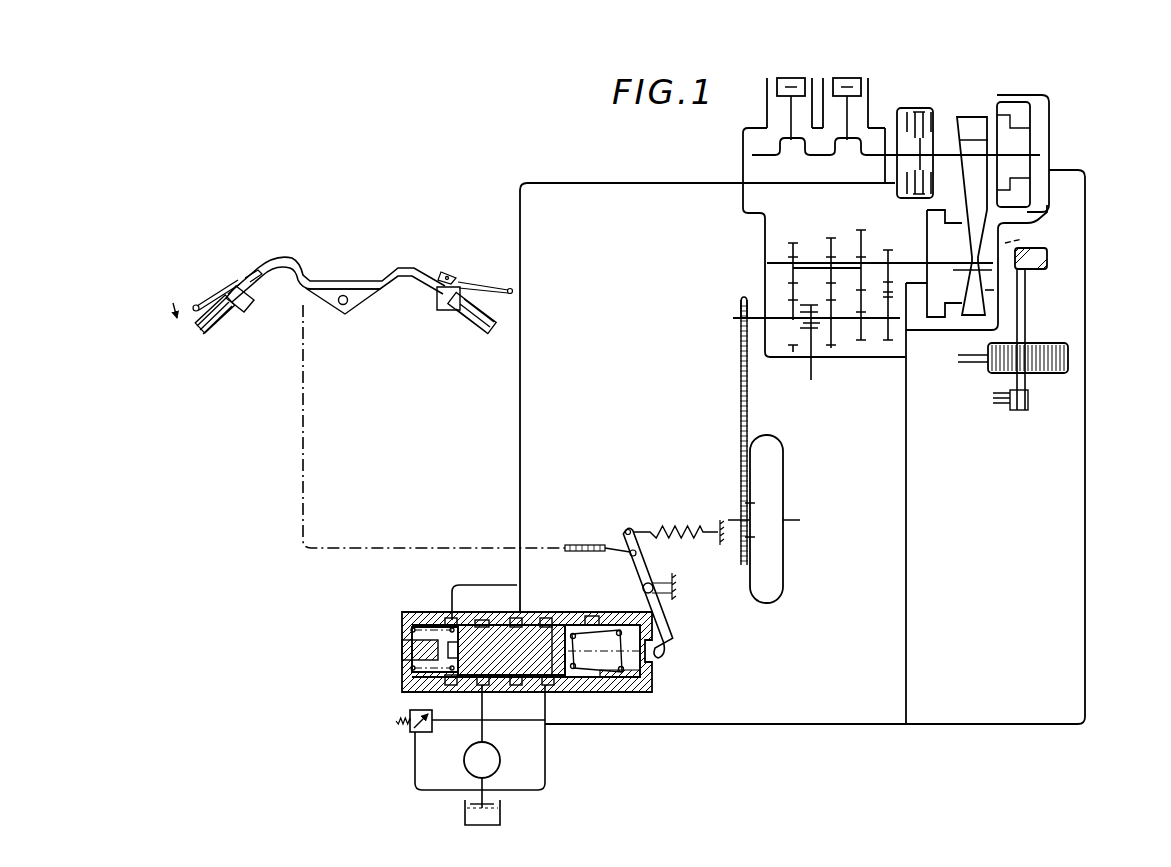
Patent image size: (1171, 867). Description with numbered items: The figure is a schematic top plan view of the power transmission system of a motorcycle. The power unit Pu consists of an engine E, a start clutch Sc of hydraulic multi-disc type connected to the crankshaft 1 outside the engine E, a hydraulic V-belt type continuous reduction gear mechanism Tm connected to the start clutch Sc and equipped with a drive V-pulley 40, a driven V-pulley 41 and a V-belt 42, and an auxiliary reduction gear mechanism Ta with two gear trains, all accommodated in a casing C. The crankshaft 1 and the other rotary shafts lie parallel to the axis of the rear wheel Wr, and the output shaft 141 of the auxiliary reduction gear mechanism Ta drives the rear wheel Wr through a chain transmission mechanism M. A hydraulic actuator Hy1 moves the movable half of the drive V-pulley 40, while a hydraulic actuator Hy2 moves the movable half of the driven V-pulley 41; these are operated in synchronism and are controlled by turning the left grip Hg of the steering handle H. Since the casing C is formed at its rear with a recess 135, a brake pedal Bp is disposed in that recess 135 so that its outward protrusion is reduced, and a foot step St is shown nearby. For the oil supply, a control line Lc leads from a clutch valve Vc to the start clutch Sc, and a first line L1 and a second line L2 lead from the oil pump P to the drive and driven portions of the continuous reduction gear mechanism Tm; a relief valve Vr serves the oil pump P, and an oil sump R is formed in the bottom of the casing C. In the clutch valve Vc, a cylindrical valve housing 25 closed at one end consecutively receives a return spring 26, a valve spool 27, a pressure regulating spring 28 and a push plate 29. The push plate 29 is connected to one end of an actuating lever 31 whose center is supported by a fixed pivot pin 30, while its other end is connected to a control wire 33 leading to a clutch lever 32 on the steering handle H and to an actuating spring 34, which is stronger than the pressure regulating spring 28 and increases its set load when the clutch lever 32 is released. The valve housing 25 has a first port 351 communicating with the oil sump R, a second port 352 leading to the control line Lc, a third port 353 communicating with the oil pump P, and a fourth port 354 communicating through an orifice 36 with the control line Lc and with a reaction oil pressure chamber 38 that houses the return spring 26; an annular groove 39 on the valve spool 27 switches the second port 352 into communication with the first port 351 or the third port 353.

The engine E is at (843, 76).
The crankshaft 1 is at (891, 157).
The start clutch Sc is at (912, 108).
The power unit Pu is at (940, 86).
The drive V-pulley 40 is at (957, 117).
The driven V-pulley 41 is at (1001, 296).
The V-belt 42 is at (973, 316).
The continuous reduction gear mechanism Tm is at (1018, 100).
The hydraulic actuator Hy1 is at (1042, 96).
The casing C is at (1049, 117).
The auxiliary reduction gear mechanism Ta is at (840, 236).
The hydraulic actuator Hy2 is at (935, 322).
The recess 135 is at (1030, 239).
The brake pedal Bp is at (1047, 260).
The foot step St is at (1040, 375).
The first line L1 is at (1085, 548).
The second line L2 is at (906, 548).
The control line Lc is at (520, 440).
The output shaft 141 is at (757, 318).
The chain transmission mechanism M is at (740, 388).
The rear wheel Wr is at (783, 573).
The steering handle H is at (407, 282).
The left grip Hg is at (230, 318).
The clutch lever 32 is at (211, 302).
The control wire 33 is at (371, 551).
The actuating spring 34 is at (676, 529).
The fixed pivot pin 30 is at (652, 595).
The actuating lever 31 is at (668, 622).
The clutch valve Vc is at (563, 604).
The valve spool 27 is at (524, 664).
The annular groove 39 is at (546, 650).
The reaction oil pressure chamber 38 is at (464, 651).
The return spring 26 is at (415, 626).
The orifice 36 is at (452, 610).
The fourth port 354 is at (470, 610).
The second port 352 is at (527, 618).
The pressure regulating spring 28 is at (593, 625).
The push plate 29 is at (640, 677).
The valve housing 25 is at (613, 690).
The third port 353 is at (490, 688).
The first port 351 is at (553, 688).
The relief valve Vr is at (470, 711).
The oil pump P is at (500, 760).
The oil sump R is at (500, 817).